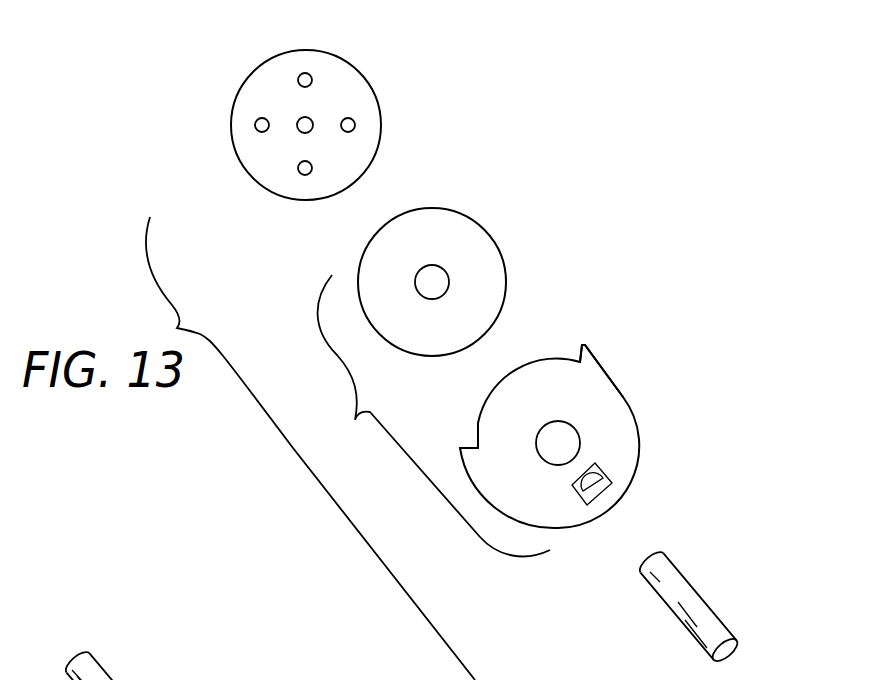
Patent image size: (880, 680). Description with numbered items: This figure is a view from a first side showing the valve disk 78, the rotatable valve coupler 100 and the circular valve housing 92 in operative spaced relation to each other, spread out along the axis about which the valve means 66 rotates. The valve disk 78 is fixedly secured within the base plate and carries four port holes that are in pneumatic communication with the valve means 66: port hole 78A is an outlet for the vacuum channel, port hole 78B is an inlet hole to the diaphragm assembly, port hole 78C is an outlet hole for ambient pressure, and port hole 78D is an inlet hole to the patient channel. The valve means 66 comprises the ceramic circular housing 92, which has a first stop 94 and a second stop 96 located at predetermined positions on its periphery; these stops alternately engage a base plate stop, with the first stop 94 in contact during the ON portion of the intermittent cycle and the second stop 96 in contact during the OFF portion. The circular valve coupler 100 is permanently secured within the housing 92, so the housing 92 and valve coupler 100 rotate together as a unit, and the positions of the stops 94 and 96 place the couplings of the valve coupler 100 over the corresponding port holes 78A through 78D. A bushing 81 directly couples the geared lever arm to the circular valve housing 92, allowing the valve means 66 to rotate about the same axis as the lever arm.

The valve means 66 is at (348, 448).
The valve disk 78 is at (345, 55).
The port hole 78A is at (355, 125).
The port hole 78B is at (300, 174).
The port hole 78C is at (255, 125).
The port hole 78D is at (306, 73).
The bushing 81 is at (688, 580).
The circular valve housing 92 is at (625, 400).
The first stop 94 is at (460, 448).
The second stop 96 is at (583, 345).
The valve coupler 100 is at (476, 222).